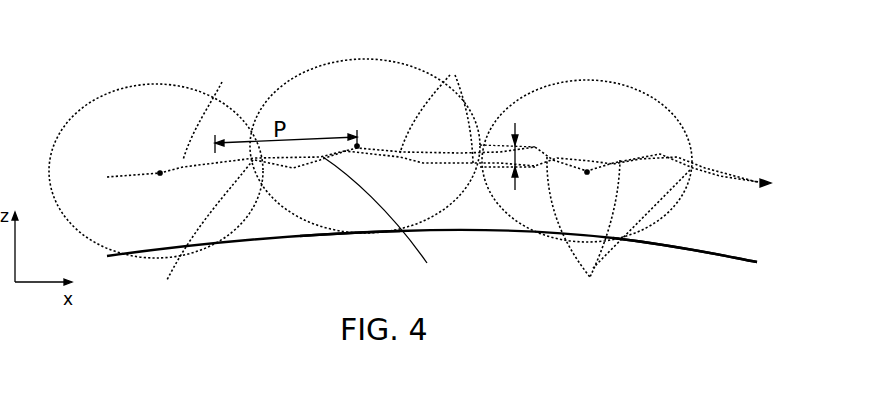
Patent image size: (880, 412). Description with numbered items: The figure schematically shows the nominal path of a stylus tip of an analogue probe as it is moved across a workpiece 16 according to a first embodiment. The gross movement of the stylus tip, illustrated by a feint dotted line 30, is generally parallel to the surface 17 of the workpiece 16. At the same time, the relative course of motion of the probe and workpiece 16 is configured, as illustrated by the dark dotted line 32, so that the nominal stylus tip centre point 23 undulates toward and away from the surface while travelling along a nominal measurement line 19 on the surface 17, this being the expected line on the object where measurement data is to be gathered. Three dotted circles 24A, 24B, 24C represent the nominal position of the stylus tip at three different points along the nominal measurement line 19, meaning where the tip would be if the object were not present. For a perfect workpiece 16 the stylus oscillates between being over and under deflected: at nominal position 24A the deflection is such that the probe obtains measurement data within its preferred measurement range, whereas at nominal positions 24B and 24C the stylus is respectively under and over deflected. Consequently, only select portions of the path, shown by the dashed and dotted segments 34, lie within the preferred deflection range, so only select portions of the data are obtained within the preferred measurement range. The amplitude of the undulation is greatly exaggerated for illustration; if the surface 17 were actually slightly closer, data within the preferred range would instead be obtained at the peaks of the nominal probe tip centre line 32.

The workpiece 16 is at (382, 268).
The surface of the workpiece 17 is at (707, 248).
The nominal measurement line 19 is at (274, 228).
The nominal stylus tip centre point 23 is at (159, 171).
The nominal stylus tip position 24A is at (133, 87).
The nominal stylus tip position 24B is at (368, 60).
The nominal stylus tip position 24C is at (597, 80).
The gross movement line 30 is at (713, 174).
The nominal undulating motion line 32 is at (660, 153).
The dashed and dotted segments 34 is at (421, 179).